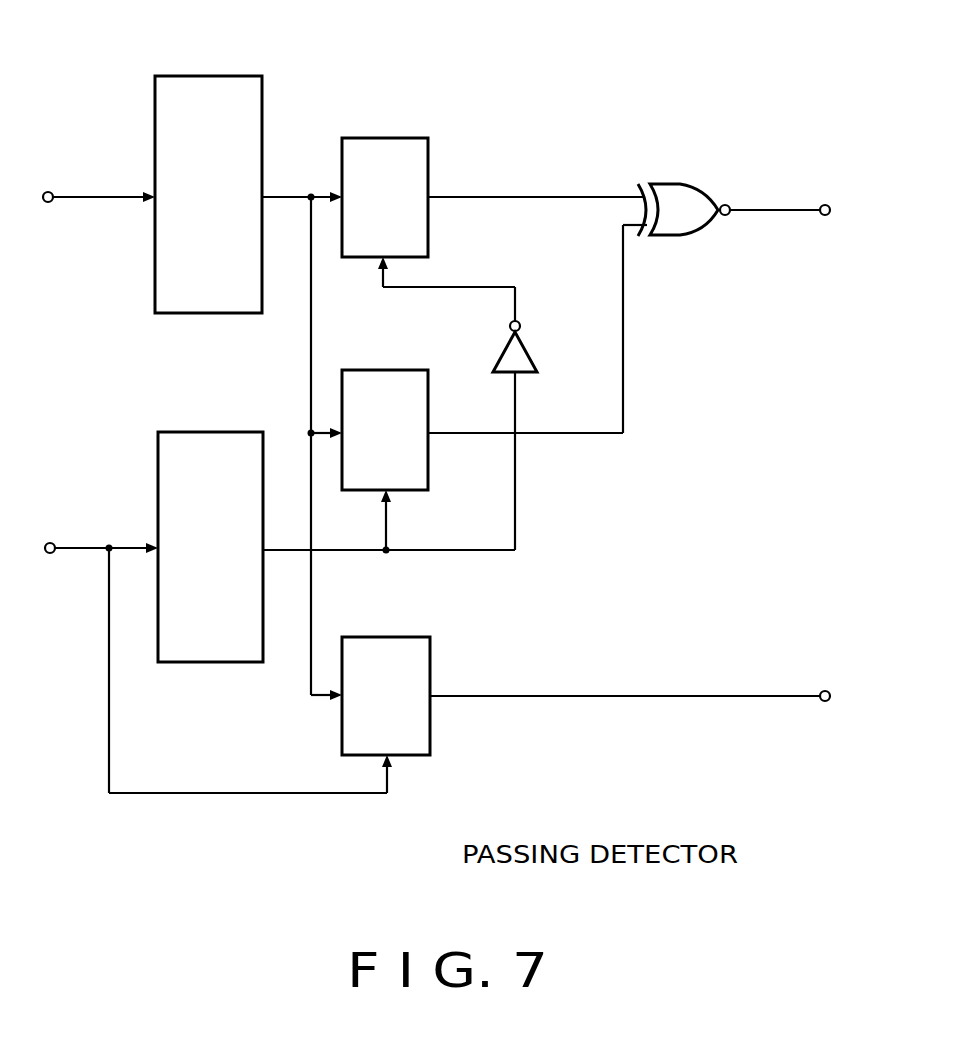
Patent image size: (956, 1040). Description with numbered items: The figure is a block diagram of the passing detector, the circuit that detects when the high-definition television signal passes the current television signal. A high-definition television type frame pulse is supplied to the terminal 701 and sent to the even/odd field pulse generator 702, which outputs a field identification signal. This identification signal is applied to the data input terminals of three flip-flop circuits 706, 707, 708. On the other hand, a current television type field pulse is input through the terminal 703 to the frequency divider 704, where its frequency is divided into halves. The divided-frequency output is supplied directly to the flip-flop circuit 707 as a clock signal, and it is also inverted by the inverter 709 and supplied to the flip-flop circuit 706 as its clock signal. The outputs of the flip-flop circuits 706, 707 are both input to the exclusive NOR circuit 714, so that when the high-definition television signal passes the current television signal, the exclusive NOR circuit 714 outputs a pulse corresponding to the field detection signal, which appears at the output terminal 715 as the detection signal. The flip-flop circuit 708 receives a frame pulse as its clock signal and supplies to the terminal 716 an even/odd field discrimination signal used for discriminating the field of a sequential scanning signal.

The terminal 701 is at (50, 192).
The even/odd field pulse generator 702 is at (231, 76).
The terminal 703 is at (50, 543).
The frequency divider 704 is at (211, 432).
The flip-flop circuit 706 is at (405, 138).
The flip-flop circuit 707 is at (387, 370).
The flip-flop circuit 708 is at (432, 639).
The inverter 709 is at (528, 352).
The exclusive NOR circuit 714 is at (684, 184).
The terminal 715 is at (825, 205).
The terminal 716 is at (825, 691).